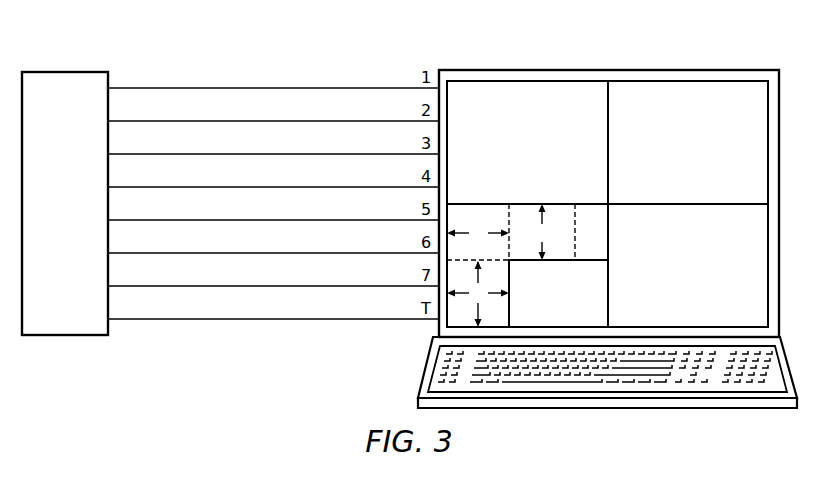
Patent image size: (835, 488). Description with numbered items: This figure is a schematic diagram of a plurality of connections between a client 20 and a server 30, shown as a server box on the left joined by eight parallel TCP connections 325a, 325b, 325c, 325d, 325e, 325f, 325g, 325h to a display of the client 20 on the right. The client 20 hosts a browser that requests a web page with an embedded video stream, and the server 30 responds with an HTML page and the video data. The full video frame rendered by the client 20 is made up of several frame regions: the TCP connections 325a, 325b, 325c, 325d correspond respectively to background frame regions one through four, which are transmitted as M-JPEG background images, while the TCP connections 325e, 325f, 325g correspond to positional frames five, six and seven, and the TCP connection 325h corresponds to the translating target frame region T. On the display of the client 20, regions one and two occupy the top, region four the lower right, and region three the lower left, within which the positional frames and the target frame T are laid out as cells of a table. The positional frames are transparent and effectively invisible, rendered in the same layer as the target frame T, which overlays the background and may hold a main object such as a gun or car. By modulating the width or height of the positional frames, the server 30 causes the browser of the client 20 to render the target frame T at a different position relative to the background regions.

The server 30 is at (65, 71).
The client 20 is at (623, 70).
The TCP connection 325a is at (373, 87).
The TCP connection 325b is at (297, 120).
The TCP connection 325c is at (243, 153).
The TCP connection 325d is at (172, 187).
The TCP connection 325e is at (172, 221).
The TCP connection 325f is at (238, 254).
The TCP connection 325g is at (278, 287).
The TCP connection 325h is at (353, 320).